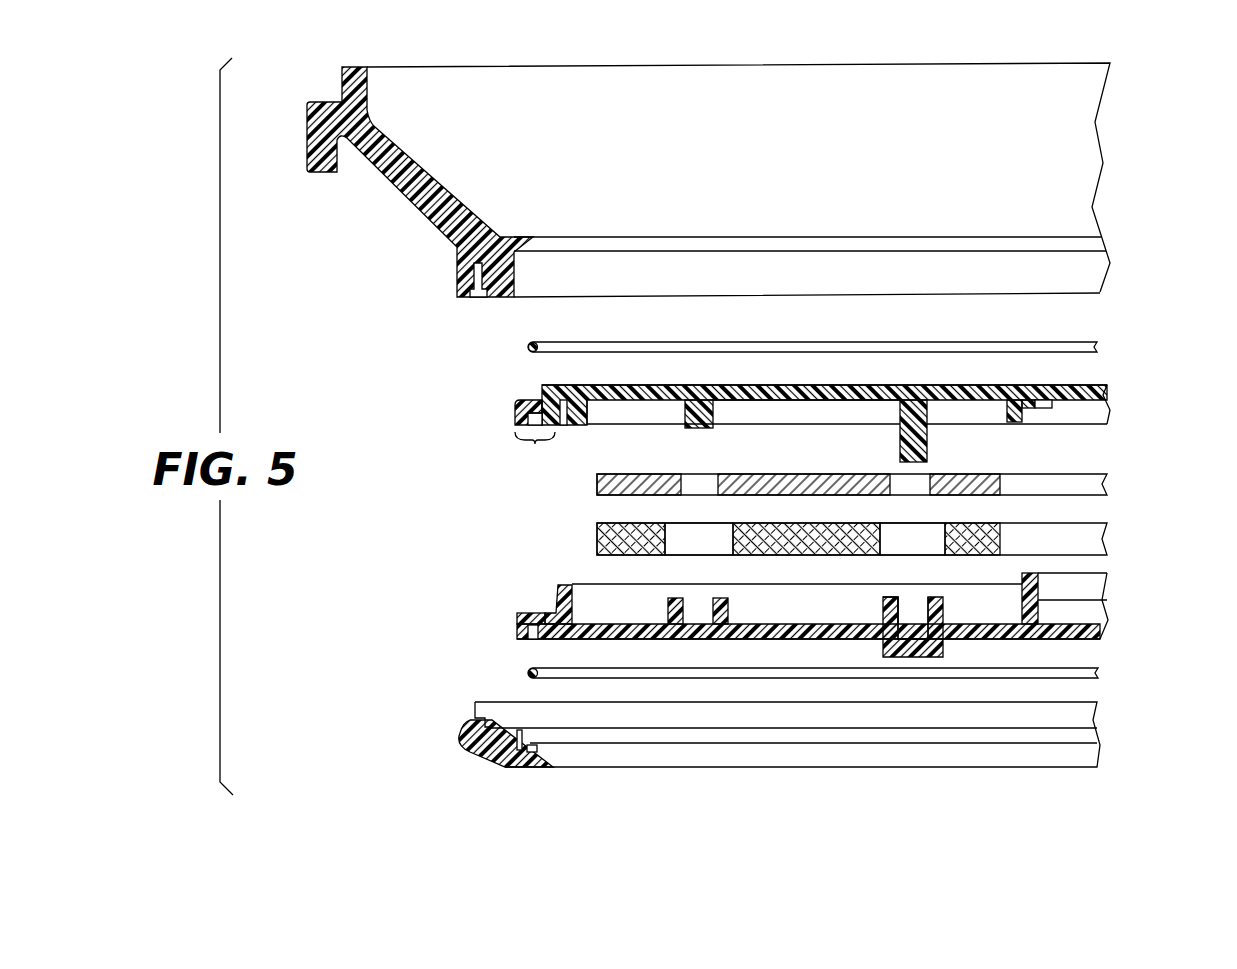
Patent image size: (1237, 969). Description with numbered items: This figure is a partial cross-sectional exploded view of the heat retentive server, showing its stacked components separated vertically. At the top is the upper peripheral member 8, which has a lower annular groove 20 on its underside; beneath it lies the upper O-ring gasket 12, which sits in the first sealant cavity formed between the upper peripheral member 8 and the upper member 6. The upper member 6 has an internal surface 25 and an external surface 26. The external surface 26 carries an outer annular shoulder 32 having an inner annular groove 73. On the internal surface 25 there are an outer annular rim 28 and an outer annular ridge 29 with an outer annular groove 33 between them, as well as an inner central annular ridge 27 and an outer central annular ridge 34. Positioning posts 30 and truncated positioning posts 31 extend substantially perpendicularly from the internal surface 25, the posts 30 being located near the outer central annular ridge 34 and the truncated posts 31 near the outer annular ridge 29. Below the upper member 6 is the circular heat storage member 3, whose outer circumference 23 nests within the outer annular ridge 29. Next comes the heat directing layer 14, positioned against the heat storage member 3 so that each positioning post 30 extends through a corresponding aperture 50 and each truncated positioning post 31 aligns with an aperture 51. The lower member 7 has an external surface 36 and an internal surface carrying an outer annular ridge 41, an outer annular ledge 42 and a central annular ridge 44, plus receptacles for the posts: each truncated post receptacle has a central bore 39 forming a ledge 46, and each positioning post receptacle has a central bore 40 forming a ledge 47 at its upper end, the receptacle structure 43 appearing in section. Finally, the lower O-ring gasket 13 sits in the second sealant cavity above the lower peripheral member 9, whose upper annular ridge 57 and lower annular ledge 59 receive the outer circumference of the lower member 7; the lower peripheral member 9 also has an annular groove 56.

The upper peripheral member 8 is at (753, 202).
The lower annular groove 20 is at (478, 298).
The upper O-ring gasket 12 is at (1080, 338).
The upper member 6 is at (833, 411).
The external surface 26 is at (1048, 383).
The outer annular shoulder 32 is at (516, 402).
The inner annular groove 73 is at (532, 398).
The outer annular rim 28 is at (498, 406).
The outer annular groove 33 is at (563, 416).
The outer annular ridge 29 is at (580, 420).
The truncated positioning post 31 is at (685, 410).
The internal surface 25 is at (815, 401).
The positioning post 30 is at (928, 448).
The outer central annular ridge 34 is at (1012, 422).
The inner central annular ridge 27 is at (1043, 410).
The heat storage member 3 is at (863, 478).
The outer circumference 23 is at (597, 486).
The heat directing layer 14 is at (906, 526).
The aperture 51 is at (700, 540).
The aperture 50 is at (918, 540).
The lower member 7 is at (783, 605).
The outer annular ledge 42 is at (520, 613).
The outer annular ridge 41 is at (560, 585).
The ledge 46 is at (675, 598).
The central bore 39 is at (700, 607).
The ledge 47 is at (890, 598).
The central bore 40 is at (913, 615).
The well 43 is at (885, 612).
The central annular ridge 44 is at (1040, 600).
The external surface 36 is at (1072, 641).
The lower O-ring gasket 13 is at (1088, 680).
The lower peripheral member 9 is at (736, 725).
The upper annular ridge 57 is at (470, 712).
The annular groove 56 is at (520, 732).
The lower annular ledge 59 is at (535, 745).